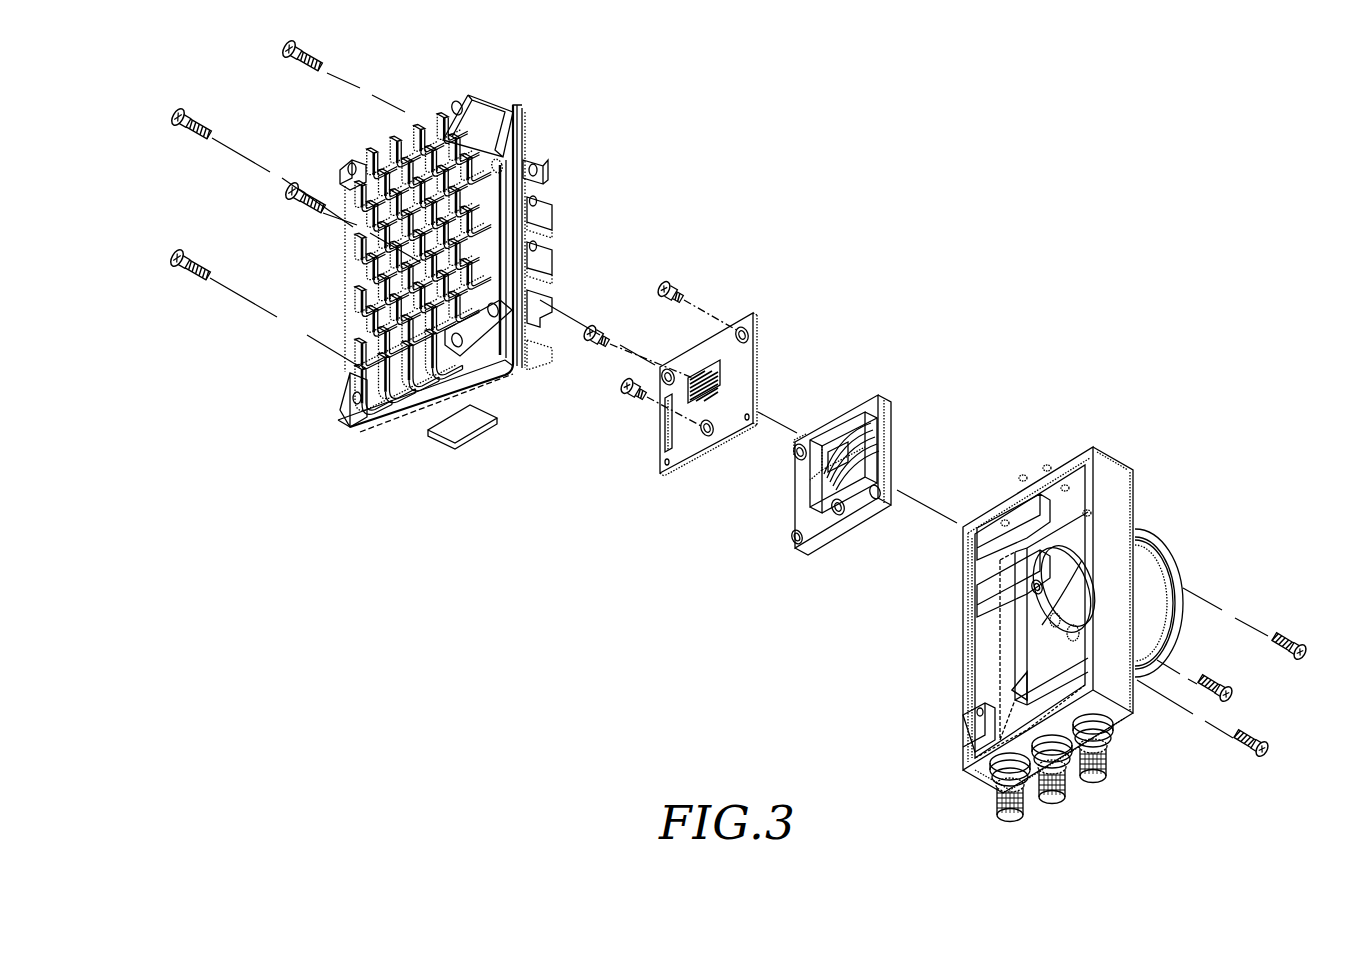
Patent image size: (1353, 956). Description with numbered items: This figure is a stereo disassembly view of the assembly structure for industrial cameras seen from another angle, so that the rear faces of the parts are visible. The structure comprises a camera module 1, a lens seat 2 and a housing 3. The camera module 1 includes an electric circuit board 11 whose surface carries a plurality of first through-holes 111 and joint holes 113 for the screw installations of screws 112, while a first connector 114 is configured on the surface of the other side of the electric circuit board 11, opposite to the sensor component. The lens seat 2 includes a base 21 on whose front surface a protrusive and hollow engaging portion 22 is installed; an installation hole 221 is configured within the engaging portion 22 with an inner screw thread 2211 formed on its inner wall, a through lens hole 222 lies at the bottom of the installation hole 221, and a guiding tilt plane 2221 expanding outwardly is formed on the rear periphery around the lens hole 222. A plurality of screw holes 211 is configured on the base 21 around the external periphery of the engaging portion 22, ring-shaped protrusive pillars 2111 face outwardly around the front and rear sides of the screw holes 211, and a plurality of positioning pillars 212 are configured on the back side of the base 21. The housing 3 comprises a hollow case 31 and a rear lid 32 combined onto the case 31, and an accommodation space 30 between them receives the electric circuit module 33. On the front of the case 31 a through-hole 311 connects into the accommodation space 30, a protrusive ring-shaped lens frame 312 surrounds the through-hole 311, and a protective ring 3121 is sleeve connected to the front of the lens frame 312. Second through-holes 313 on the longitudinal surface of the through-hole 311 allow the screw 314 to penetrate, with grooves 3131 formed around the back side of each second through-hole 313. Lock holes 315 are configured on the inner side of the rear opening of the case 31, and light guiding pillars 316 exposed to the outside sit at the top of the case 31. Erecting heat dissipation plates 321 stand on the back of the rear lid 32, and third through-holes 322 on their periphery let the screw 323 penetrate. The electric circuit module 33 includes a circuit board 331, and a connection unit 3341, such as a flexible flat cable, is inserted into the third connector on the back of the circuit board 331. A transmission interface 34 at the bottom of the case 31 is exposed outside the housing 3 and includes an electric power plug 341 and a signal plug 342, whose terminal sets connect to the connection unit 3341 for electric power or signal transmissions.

The camera module 1 is at (768, 394).
The electric circuit board 11 is at (695, 395).
The first through-holes 111 is at (746, 333).
The screws 112 is at (680, 288).
The joint holes 113 is at (660, 461).
The first connector 114 is at (665, 427).
The lens seat 2 is at (838, 508).
The base 21 is at (800, 478).
The screw holes 211 is at (796, 450).
The ring-shaped protrusive pillars 2111 is at (807, 450).
The positioning pillars 212 is at (790, 538).
The engaging portion 22 is at (840, 474).
The installation hole 221 is at (866, 455).
The inner screw thread 2211 is at (845, 445).
The lens hole 222 is at (813, 490).
The guiding tilt plane 2221 is at (823, 475).
The housing 3 is at (1102, 631).
The accommodation space 30 is at (998, 598).
The case 31 is at (1123, 492).
The through-hole 311 is at (1067, 560).
The lens frame 312 is at (1203, 602).
The protective ring 3121 is at (1183, 583).
The second through-holes 313 is at (971, 555).
The grooves 3131 is at (1024, 566).
The screw 314 is at (1294, 642).
The lock holes 315 is at (975, 712).
The light guiding pillars 316 is at (1022, 508).
The rear lid 32 is at (519, 287).
The heat dissipation plates 321 is at (376, 155).
The third through-holes 322 is at (533, 170).
The screw 323 is at (205, 126).
The electric circuit module 33 is at (613, 283).
The circuit board 331 is at (530, 212).
The connection unit 3341 is at (465, 426).
The transmission interface 34 is at (1081, 782).
The electric power plug 341 is at (1110, 755).
The signal plug 342 is at (1058, 768).